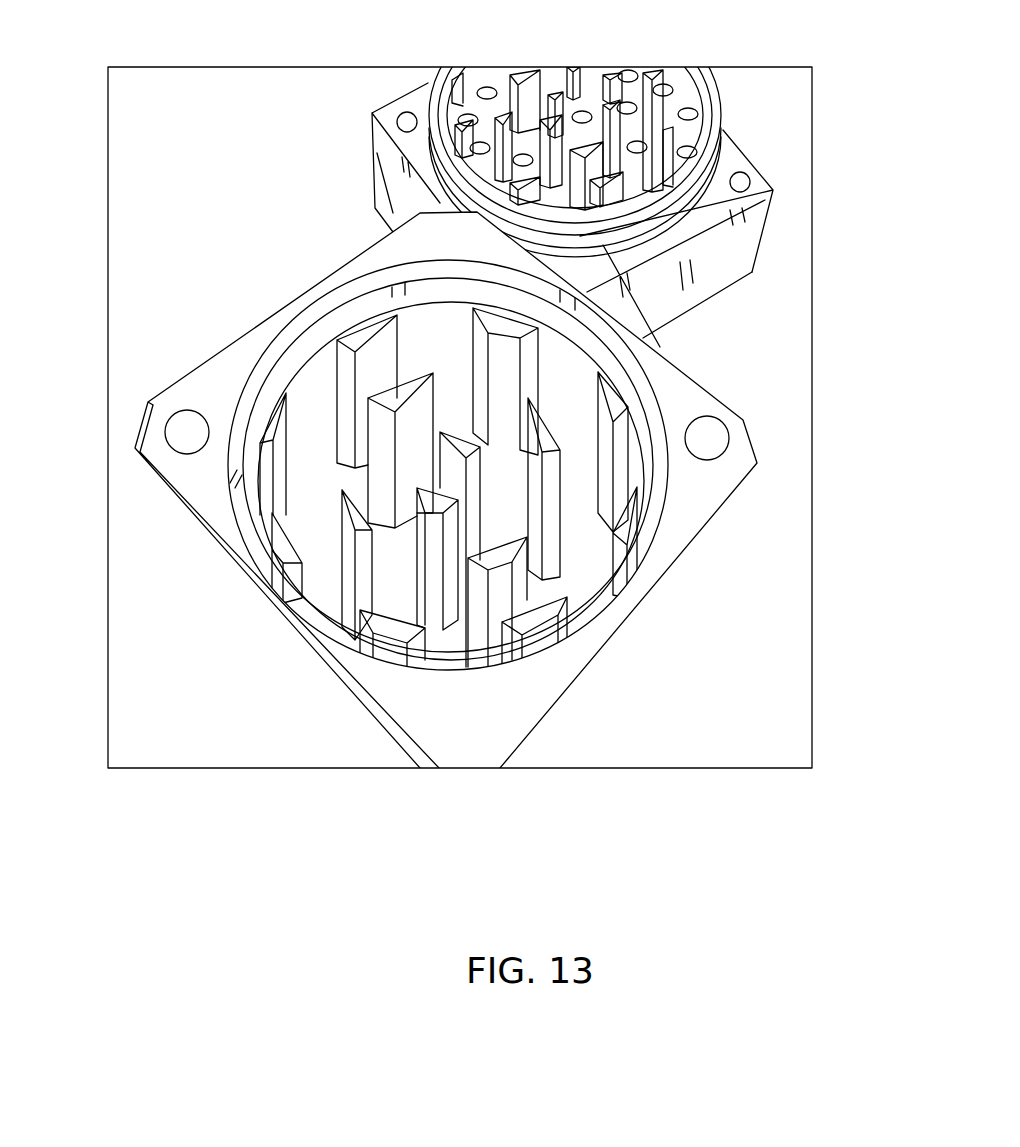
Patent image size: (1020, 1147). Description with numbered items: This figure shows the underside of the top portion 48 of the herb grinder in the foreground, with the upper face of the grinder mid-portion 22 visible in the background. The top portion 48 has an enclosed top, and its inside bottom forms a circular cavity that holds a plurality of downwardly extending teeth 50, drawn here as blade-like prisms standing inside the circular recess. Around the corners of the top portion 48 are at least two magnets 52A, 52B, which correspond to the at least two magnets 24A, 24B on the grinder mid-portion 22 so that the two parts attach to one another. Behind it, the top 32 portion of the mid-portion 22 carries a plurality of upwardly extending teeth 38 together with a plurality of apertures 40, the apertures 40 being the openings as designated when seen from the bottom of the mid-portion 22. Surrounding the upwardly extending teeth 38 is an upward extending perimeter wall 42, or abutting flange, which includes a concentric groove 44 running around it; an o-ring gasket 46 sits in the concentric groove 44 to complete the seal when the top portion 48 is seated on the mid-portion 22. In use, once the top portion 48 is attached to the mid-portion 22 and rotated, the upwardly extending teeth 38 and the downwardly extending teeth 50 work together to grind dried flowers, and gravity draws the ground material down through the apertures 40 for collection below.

The grinder mid-portion 22 is at (710, 67).
The magnet 24A is at (407, 112).
The magnet 24B is at (752, 182).
The top portion of the grinder mid-portion 32 is at (762, 203).
The upwardly extending teeth 38 is at (566, 96).
The apertures 40 is at (688, 113).
The upward extending perimeter wall 42 is at (700, 252).
The concentric groove 44 is at (707, 297).
The o-ring gasket 46 is at (708, 223).
The top portion 48 is at (452, 755).
The downwardly extending teeth 50 is at (557, 620).
The magnet 52A is at (165, 433).
The magnet 52B is at (729, 436).